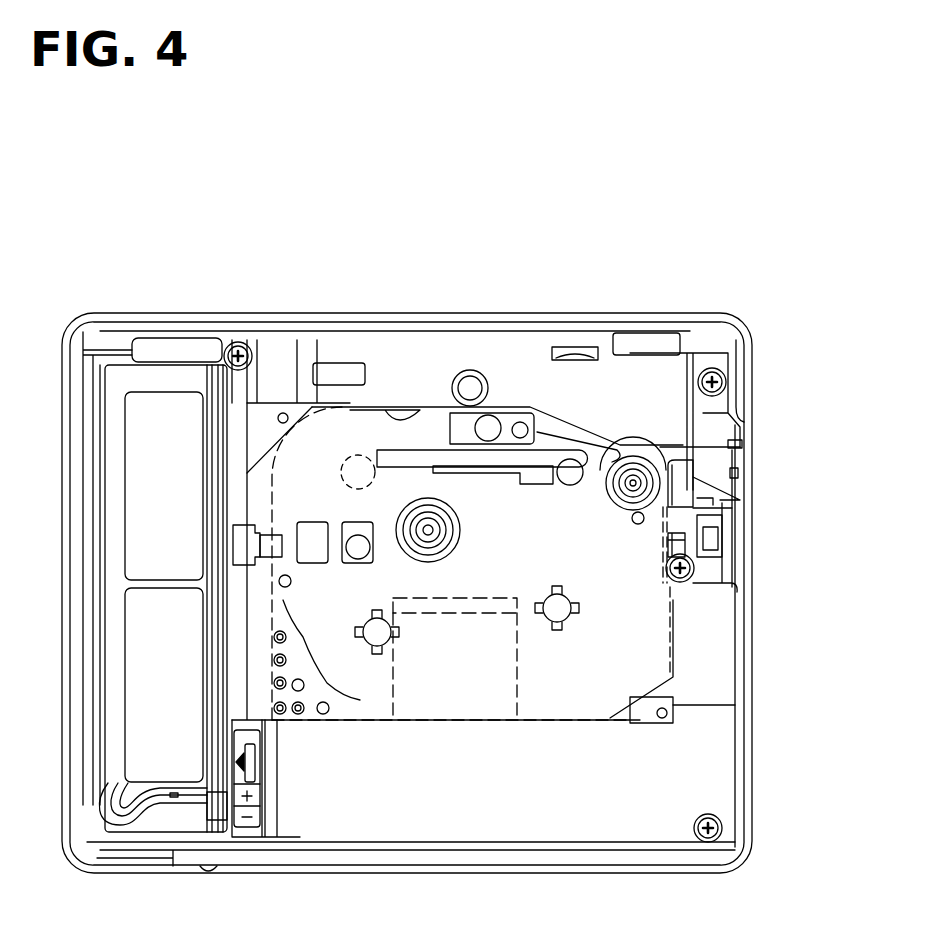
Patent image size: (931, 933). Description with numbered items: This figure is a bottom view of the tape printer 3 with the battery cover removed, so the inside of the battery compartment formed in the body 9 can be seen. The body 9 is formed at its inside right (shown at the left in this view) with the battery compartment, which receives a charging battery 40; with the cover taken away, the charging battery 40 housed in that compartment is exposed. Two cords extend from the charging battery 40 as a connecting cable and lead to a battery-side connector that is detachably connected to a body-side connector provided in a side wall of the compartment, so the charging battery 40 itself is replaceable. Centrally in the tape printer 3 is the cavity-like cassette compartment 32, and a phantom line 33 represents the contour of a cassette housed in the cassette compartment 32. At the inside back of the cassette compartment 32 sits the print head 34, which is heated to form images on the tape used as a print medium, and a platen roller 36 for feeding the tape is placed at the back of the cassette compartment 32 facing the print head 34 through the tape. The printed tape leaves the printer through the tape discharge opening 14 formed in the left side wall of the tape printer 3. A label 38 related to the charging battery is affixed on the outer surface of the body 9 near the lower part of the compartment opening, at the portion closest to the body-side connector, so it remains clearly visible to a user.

The tape printer 3 is at (72, 291).
The body 9 is at (692, 785).
The tape discharge opening 14 is at (745, 474).
The cassette compartment 32 is at (519, 545).
The phantom line 33 is at (665, 613).
The print head 34 is at (410, 455).
The platen roller 36 is at (575, 352).
The label 38 is at (265, 763).
The charging battery 40 is at (170, 536).